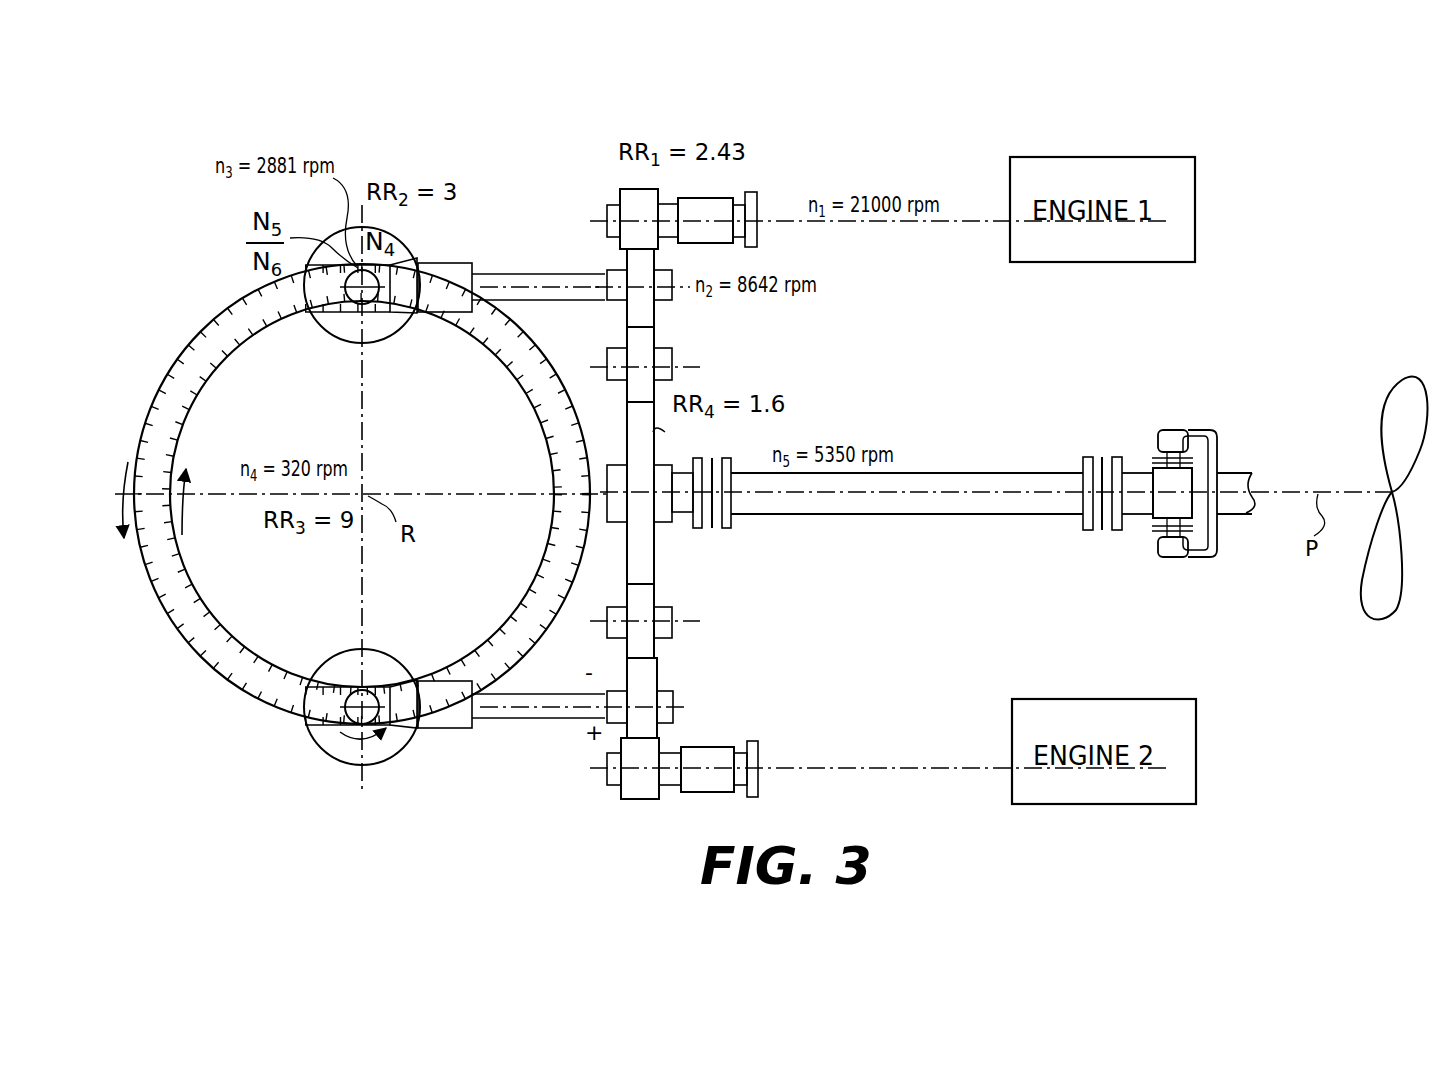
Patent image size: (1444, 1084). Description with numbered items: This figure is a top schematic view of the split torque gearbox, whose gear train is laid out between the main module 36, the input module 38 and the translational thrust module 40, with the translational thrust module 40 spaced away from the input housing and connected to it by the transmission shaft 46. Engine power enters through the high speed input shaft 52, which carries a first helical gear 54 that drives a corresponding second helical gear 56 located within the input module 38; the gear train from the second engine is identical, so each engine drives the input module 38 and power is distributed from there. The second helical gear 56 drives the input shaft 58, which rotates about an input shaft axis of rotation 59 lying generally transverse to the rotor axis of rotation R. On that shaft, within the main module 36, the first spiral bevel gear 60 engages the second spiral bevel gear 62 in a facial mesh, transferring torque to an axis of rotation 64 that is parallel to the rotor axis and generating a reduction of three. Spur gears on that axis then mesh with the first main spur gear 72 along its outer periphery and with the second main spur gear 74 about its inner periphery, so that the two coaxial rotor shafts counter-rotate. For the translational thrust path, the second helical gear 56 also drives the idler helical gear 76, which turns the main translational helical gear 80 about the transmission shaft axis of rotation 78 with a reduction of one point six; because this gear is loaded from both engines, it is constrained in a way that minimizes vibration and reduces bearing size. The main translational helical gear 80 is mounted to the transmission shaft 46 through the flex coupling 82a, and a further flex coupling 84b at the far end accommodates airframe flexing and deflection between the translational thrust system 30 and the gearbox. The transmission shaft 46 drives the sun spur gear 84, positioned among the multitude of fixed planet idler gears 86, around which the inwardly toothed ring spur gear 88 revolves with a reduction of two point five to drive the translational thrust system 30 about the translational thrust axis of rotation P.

The translational thrust system 30 is at (1342, 414).
The main module 36 is at (345, 507).
The input module 38 is at (598, 794).
The translational thrust module 40 is at (1159, 455).
The transmission shaft 46 is at (924, 498).
The high speed input shaft 52 is at (732, 198).
The helical gear N1 54 is at (622, 202).
The helical gear N2 56 is at (672, 300).
The input shaft 58 is at (562, 282).
The input shaft axis of rotation 59 is at (576, 294).
The spiral bevel gear N3 60 is at (446, 265).
The spiral bevel gear N4 62 is at (384, 318).
The axis of rotation 64 is at (356, 300).
The main spur gear N7 72 is at (204, 394).
The main spur gear N8 74 is at (160, 396).
The helical gear N9 76 is at (672, 378).
The transmission shaft axis of rotation 78 is at (966, 492).
The main translational helical gear N10 80 is at (654, 536).
The flex coupling 82a is at (734, 524).
The spur gear N11 84 is at (1154, 477).
The coupling flange 84b is at (1084, 528).
The planet idler gears N12 86 is at (1184, 456).
The spur gear N13 88 is at (1208, 436).